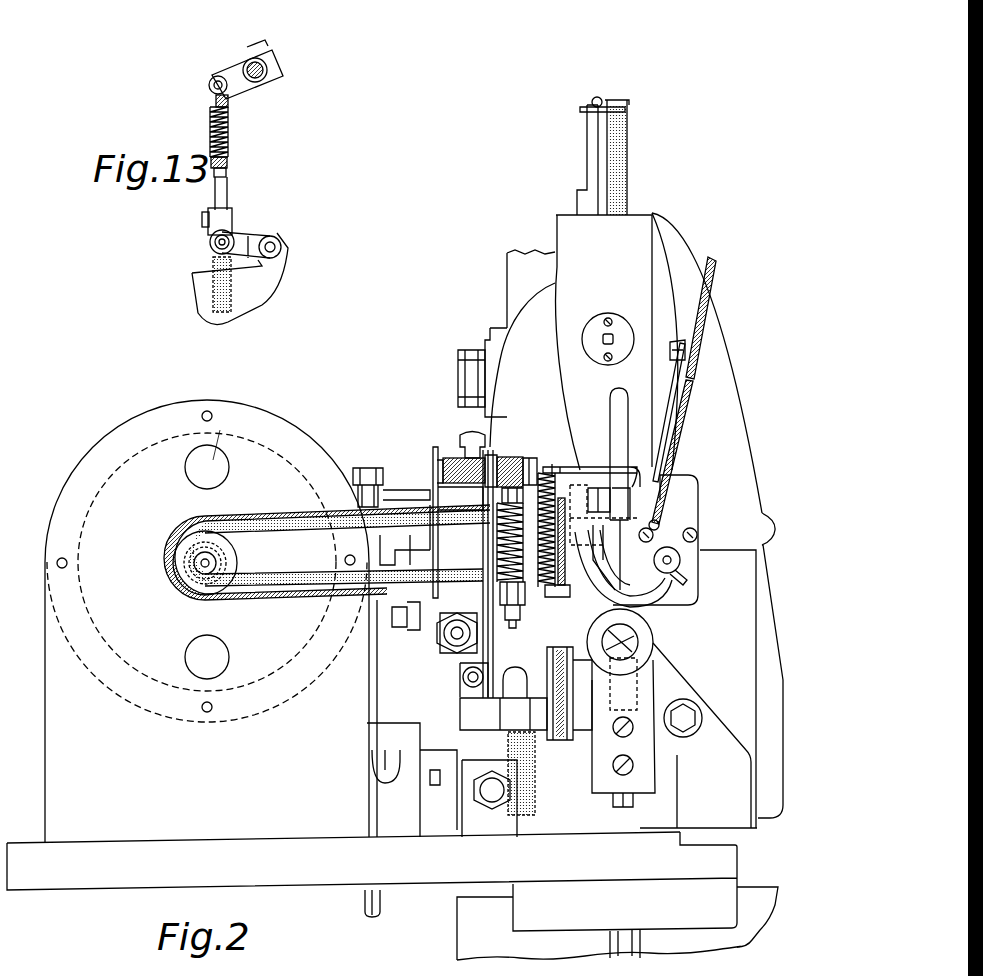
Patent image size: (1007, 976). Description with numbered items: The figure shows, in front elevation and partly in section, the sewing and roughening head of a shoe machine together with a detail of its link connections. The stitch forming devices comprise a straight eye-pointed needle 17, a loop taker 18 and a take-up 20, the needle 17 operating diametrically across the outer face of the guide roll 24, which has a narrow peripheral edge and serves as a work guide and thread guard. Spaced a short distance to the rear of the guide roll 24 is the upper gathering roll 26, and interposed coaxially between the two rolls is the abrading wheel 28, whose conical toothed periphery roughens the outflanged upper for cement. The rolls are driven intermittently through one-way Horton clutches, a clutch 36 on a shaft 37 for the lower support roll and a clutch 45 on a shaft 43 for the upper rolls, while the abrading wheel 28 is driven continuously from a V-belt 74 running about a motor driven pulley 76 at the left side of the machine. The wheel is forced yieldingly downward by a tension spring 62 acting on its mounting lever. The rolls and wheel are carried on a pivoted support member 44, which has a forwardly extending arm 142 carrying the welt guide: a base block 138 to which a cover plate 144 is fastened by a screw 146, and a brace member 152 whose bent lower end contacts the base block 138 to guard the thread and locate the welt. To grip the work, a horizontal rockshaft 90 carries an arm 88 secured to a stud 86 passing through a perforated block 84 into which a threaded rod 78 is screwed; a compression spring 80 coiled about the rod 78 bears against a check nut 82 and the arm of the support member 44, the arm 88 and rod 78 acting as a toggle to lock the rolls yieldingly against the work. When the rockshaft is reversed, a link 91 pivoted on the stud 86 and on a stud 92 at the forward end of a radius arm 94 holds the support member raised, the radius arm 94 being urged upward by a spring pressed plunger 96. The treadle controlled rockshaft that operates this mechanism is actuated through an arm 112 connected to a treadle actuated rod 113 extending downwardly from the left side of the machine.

In FIG. 2, the needle 17 is at (631, 548).
In FIG. 2, the loop taker 18 is at (631, 645).
In FIG. 2, the take-up 20 is at (628, 111).
In FIG. 2, the guide roll 24 is at (677, 568).
In FIG. 2, the upper gathering roll 26 is at (631, 610).
In FIG. 2, the abrading wheel 28 is at (646, 592).
In FIG. 2, the one-way Horton clutch 36 is at (568, 743).
In FIG. 2, the shaft 37 is at (623, 732).
In FIG. 2, the shaft 43 is at (577, 468).
In FIG. 13, the support member 44 is at (228, 163).
In FIG. 2, the support member 44 is at (561, 600).
In FIG. 2, the one-way Horton clutch 45 is at (581, 590).
In FIG. 2, the tension spring 62 is at (540, 533).
In FIG. 2, the V-belt 74 is at (319, 530).
In FIG. 2, the motor driven pulley 76 is at (183, 580).
In FIG. 13, the threaded rod 78 is at (226, 180).
In FIG. 2, the threaded rod 78 is at (511, 620).
In FIG. 13, the compression spring 80 is at (229, 141).
In FIG. 2, the compression spring 80 is at (523, 558).
In FIG. 13, the check nut 82 is at (214, 102).
In FIG. 2, the check nut 82 is at (483, 498).
In FIG. 2, the perforated block 84 is at (508, 460).
In FIG. 13, the stud 86 is at (209, 84).
In FIG. 2, the stud 86 is at (528, 468).
In FIG. 13, the arm 88 is at (232, 63).
In FIG. 2, the arm 88 is at (460, 450).
In FIG. 13, the rockshaft 90 is at (267, 63).
In FIG. 13, the link 91 is at (214, 203).
In FIG. 2, the link 91 is at (483, 653).
In FIG. 13, the stud 92 is at (214, 241).
In FIG. 2, the stud 92 is at (463, 707).
In FIG. 13, the radius arm 94 is at (247, 232).
In FIG. 2, the radius arm 94 is at (512, 726).
In FIG. 13, the spring pressed plunger 96 is at (213, 260).
In FIG. 2, the spring pressed plunger 96 is at (534, 752).
In FIG. 2, the arm 112 is at (393, 490).
In FIG. 2, the treadle actuated rod 113 is at (365, 907).
In FIG. 2, the base block 138 is at (643, 504).
In FIG. 2, the forwardly extending arm 142 is at (600, 500).
In FIG. 2, the cover plate 144 is at (656, 517).
In FIG. 2, the screw 146 is at (670, 530).
In FIG. 2, the brace member 152 is at (563, 475).